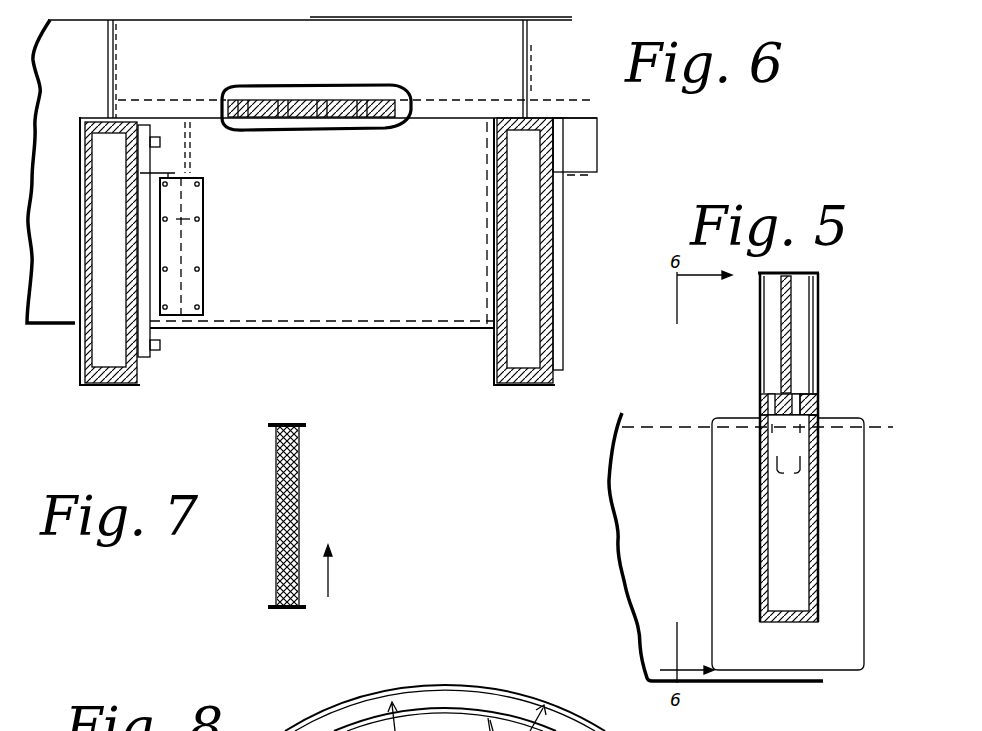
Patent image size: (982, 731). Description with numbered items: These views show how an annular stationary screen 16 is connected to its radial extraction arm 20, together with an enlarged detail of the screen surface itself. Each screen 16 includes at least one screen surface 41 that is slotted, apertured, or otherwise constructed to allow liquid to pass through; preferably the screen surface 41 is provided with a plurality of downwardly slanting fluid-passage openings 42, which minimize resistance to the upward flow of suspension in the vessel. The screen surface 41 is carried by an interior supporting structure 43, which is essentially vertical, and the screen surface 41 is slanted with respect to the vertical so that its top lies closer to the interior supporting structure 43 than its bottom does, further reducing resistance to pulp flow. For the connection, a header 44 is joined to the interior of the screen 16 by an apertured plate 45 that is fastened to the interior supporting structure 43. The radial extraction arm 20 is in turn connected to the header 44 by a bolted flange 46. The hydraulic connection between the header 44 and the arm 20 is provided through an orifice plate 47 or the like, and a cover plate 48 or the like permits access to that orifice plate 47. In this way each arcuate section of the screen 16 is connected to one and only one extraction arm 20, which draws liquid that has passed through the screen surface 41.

In FIG. 6, the annular stationary screen 16 is at (505, 60).
In FIG. 5, the annular stationary screen 16 is at (740, 398).
In FIG. 6, the radial extraction arm 20 is at (90, 352).
In FIG. 5, the radial extraction arm 20 is at (665, 434).
In FIG. 5, the screen surface 41 is at (773, 373).
In FIG. 7, the screen surface 41 is at (300, 474).
In FIG. 7, the downwardly slanting fluid-passage openings 42 is at (280, 582).
In FIG. 5, the interior supporting structure 43 is at (792, 379).
In FIG. 6, the header 44 is at (458, 126).
In FIG. 5, the header 44 is at (838, 577).
In FIG. 6, the apertured plate 45 is at (376, 100).
In FIG. 5, the apertured plate 45 is at (820, 415).
In FIG. 6, the bolted flange 46 is at (143, 128).
In FIG. 5, the bolted flange 46 is at (718, 573).
In FIG. 6, the orifice plate 47 is at (192, 214).
In FIG. 6, the cover plate 48 is at (200, 284).